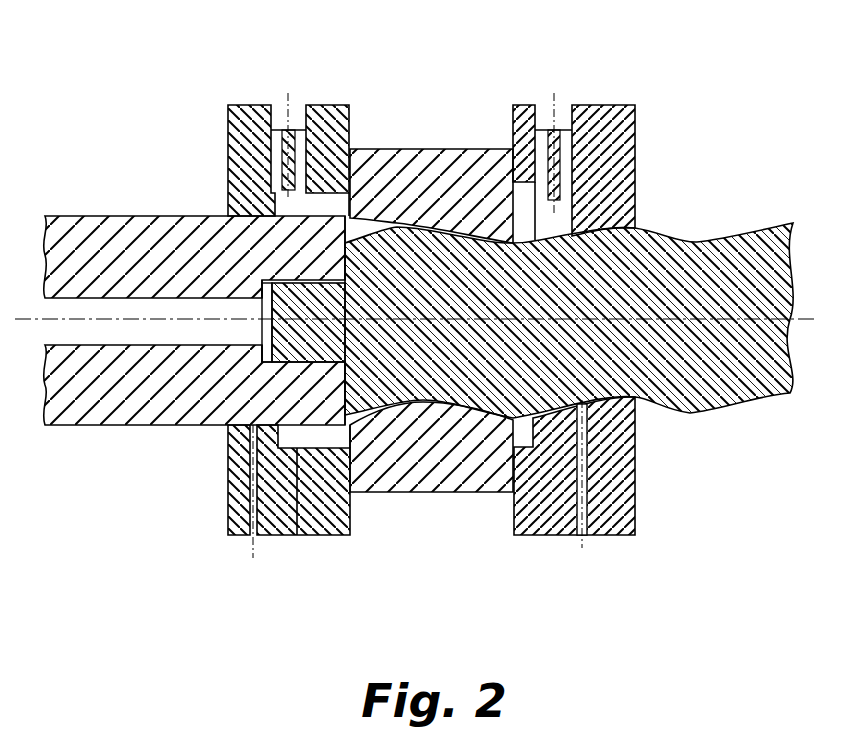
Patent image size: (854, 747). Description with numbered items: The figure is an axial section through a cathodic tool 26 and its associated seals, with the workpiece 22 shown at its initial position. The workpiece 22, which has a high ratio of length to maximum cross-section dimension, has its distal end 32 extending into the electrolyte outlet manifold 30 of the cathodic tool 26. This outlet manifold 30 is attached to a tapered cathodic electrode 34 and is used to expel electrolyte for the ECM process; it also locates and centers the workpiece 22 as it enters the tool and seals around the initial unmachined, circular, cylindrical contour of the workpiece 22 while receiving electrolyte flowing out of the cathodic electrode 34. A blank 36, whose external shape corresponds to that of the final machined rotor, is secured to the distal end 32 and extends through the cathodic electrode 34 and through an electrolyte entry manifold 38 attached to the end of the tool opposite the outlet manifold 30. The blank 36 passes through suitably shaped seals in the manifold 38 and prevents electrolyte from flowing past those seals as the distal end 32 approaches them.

The workpiece 22 is at (133, 216).
The cathodic tool 26 is at (432, 289).
The electrolyte outlet manifold 30 is at (250, 105).
The distal end of the workpiece 32 is at (320, 395).
The tapered cathodic electrode 34 is at (403, 148).
The blank 36 is at (700, 414).
The electrolyte entry manifold 38 is at (612, 105).